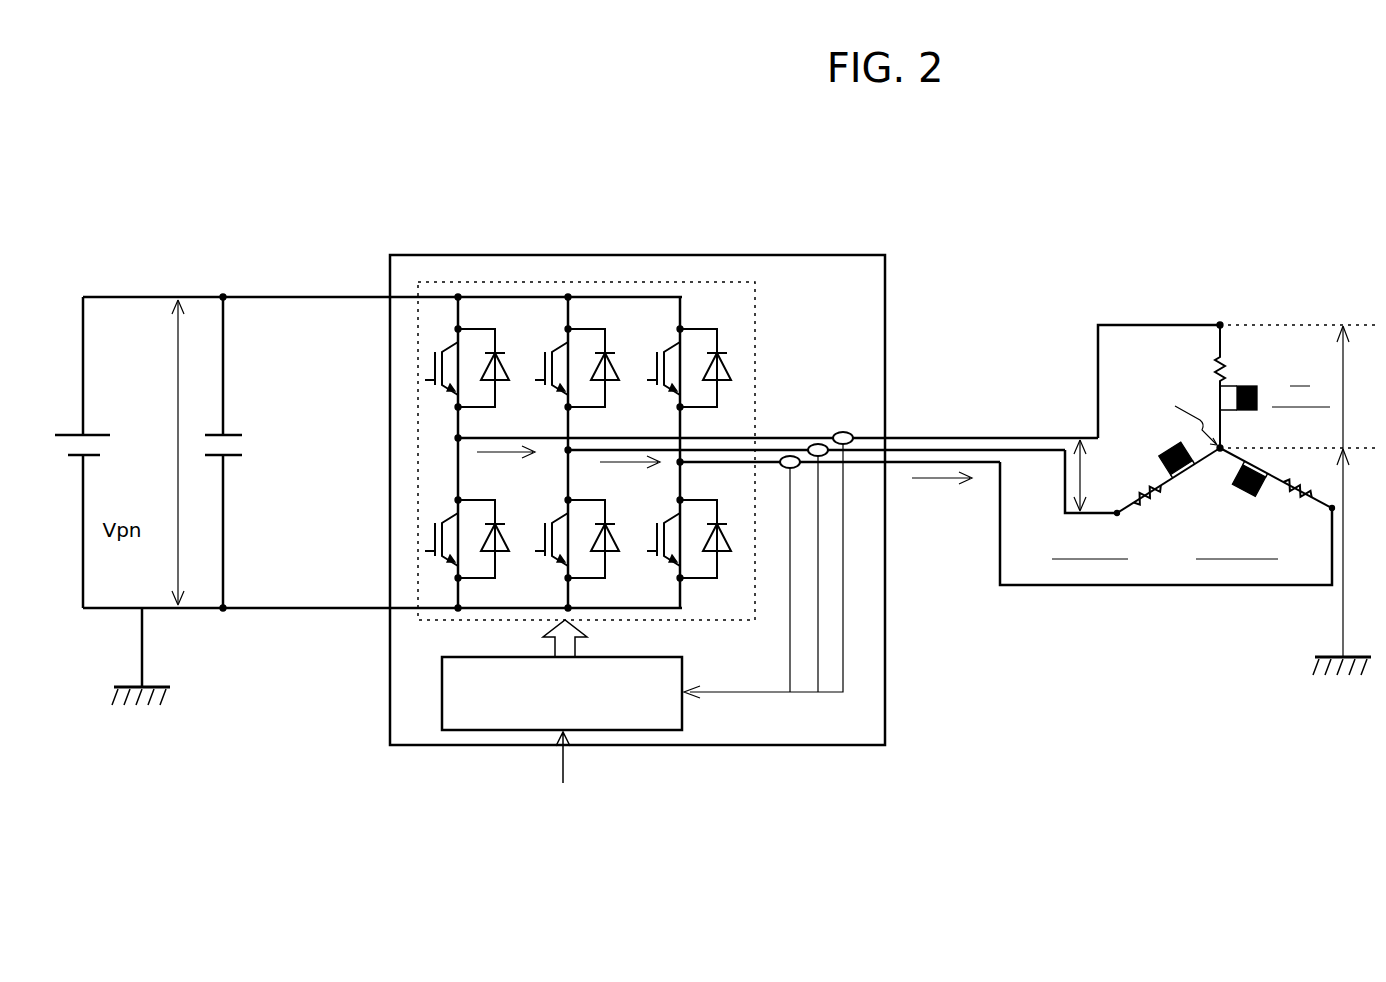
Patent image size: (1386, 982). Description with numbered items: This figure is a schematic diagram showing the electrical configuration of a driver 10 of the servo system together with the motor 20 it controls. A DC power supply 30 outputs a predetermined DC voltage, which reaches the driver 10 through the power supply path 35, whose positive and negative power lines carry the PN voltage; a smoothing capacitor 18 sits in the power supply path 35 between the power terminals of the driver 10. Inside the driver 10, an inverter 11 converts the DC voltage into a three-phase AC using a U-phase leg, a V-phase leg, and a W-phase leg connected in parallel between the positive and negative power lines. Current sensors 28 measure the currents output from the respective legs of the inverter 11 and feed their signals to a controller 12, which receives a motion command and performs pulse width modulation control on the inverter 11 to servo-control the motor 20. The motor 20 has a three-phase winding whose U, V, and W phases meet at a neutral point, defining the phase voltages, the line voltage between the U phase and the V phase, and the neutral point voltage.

The power supply path 35 is at (272, 294).
The DC power supply 30 is at (96, 434).
The smoothing capacitor 18 is at (240, 435).
The driver 10 is at (886, 310).
The inverter 11 is at (757, 352).
The current sensor 28 is at (843, 432).
The controller 12 is at (684, 680).
The motor 20 is at (1304, 288).